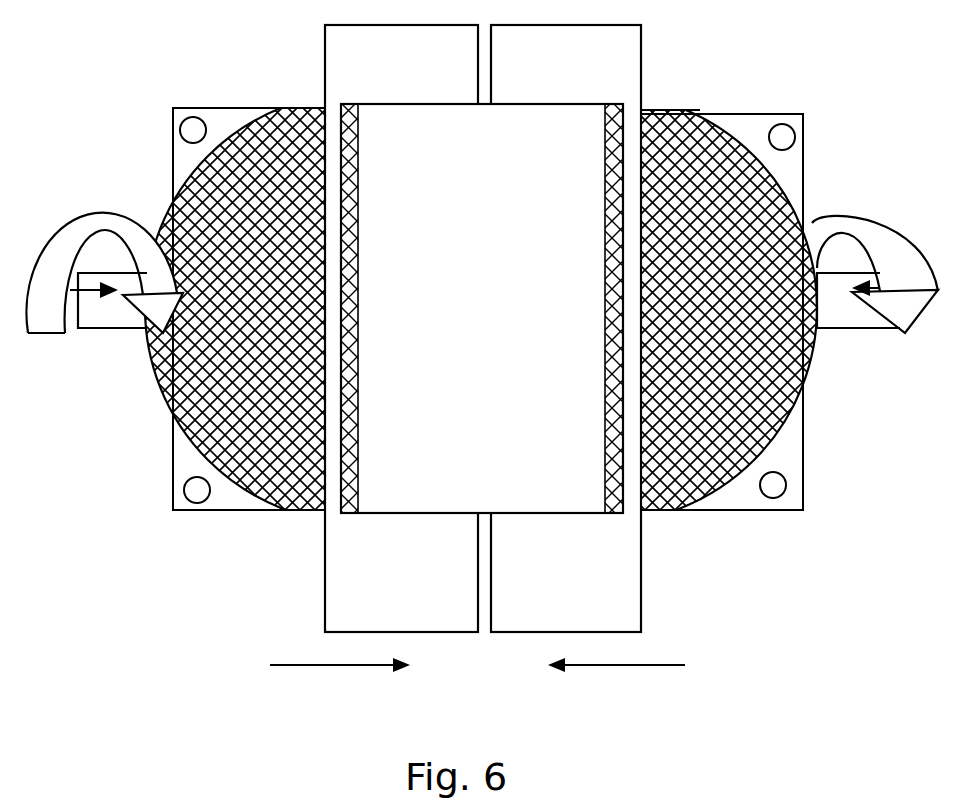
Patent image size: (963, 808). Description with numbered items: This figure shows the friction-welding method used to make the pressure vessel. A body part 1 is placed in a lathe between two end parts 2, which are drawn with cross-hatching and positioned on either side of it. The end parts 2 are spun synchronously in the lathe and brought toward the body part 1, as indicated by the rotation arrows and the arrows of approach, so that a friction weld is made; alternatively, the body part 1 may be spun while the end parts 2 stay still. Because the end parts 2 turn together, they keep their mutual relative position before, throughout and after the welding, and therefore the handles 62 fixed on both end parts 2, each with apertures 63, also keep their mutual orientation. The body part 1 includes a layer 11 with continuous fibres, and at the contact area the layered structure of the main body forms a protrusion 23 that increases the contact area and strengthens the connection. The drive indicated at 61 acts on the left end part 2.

The body part 1 is at (471, 432).
The end parts 2 is at (258, 432).
The layer with continuous fibres 11 is at (613, 480).
The protrusion 23 is at (632, 152).
The left actuator 61 is at (114, 328).
The handles 62 is at (744, 508).
The apertures 63 is at (795, 481).